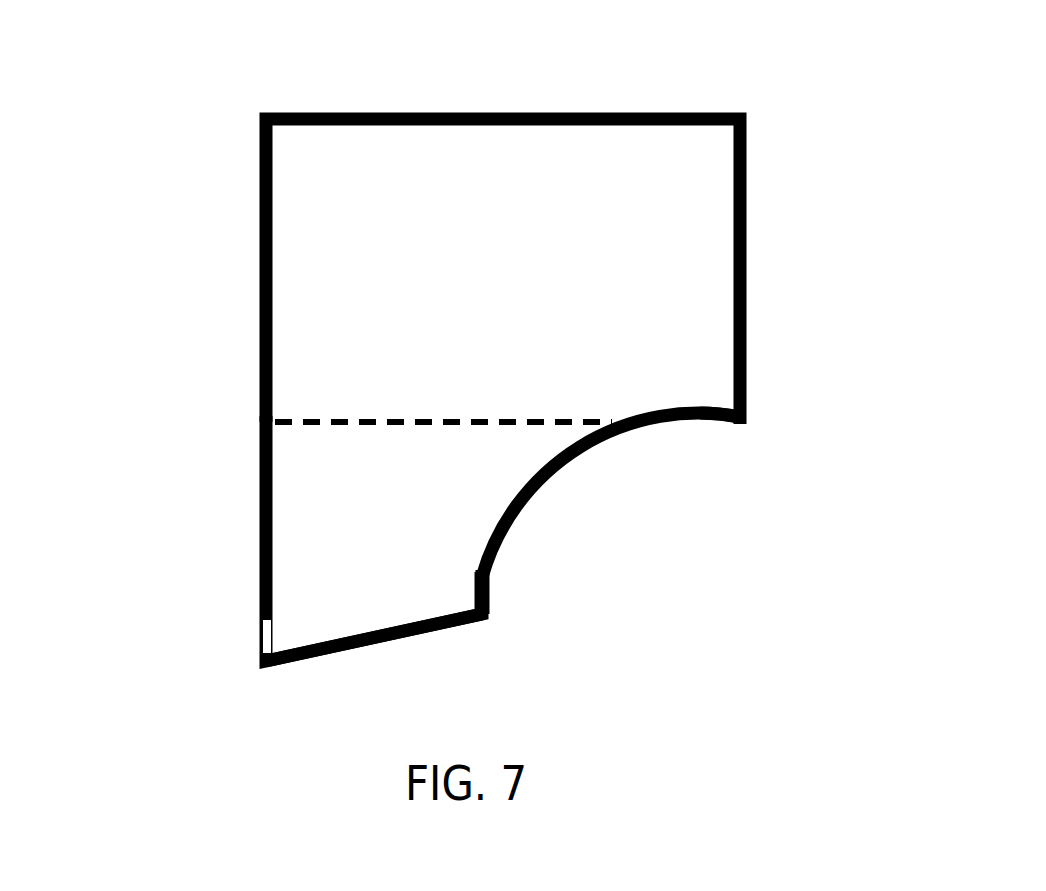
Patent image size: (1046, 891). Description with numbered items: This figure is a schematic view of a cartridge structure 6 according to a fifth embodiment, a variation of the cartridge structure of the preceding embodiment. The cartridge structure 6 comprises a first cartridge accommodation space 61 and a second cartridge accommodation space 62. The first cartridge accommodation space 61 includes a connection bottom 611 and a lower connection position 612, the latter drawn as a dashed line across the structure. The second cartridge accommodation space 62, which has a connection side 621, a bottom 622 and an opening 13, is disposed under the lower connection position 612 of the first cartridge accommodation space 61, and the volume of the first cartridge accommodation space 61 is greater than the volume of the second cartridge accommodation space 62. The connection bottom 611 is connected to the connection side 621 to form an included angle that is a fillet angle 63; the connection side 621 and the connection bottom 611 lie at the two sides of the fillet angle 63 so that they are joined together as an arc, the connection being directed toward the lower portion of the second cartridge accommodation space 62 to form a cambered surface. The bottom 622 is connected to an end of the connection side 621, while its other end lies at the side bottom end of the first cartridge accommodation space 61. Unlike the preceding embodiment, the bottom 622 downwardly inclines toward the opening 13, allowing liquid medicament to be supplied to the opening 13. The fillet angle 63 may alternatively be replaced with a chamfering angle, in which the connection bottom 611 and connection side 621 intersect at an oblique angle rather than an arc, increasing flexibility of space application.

The cartridge structure 6 is at (525, 78).
The first cartridge accommodation space 61 is at (666, 273).
The connection bottom 611 is at (707, 421).
The lower connection position 612 is at (440, 422).
The second cartridge accommodation space 62 is at (337, 553).
The connection side 621 is at (490, 603).
The bottom 622 is at (386, 647).
The fillet angle 63 is at (585, 450).
The opening 13 is at (268, 637).